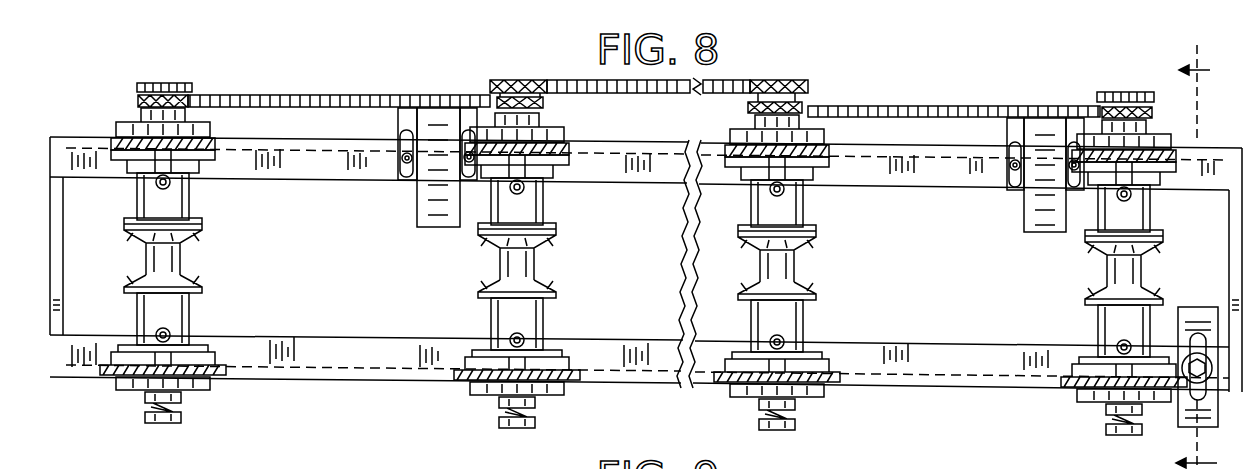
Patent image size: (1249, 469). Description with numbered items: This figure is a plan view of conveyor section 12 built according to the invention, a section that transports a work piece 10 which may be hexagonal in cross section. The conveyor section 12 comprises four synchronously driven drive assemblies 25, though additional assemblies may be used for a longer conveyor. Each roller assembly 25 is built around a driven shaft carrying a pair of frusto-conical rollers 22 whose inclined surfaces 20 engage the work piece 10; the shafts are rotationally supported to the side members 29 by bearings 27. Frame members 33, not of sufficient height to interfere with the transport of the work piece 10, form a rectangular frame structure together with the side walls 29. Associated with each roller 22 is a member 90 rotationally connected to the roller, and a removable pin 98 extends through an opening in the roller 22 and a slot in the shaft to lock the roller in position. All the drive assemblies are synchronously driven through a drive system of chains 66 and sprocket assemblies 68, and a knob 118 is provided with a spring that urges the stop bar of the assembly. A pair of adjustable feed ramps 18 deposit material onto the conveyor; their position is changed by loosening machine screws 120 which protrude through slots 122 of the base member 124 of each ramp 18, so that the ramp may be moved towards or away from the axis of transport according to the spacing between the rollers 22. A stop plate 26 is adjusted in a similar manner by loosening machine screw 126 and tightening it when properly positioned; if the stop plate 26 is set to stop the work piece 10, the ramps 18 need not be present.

The work piece 10 is at (1208, 257).
The conveyor section 12 is at (356, 379).
The adjustable feed ramp 18 is at (410, 225).
The inclined surface 20 is at (191, 282).
The frusto-conical roller 22 is at (190, 200).
The roller assembly 25 is at (639, 285).
The stop plate 26 is at (1185, 423).
The bearing 27 is at (205, 387).
The side member 29 is at (263, 138).
The frame member 33 is at (60, 274).
The chain 66 is at (298, 95).
The sprocket assembly 68 is at (518, 80).
The member 90 is at (126, 176).
The removable pin 98 is at (155, 335).
The knob 118 is at (175, 425).
The machine screw 120 is at (402, 156).
The slot 122 is at (393, 178).
The base member 124 is at (399, 118).
The machine screw 126 is at (1202, 375).